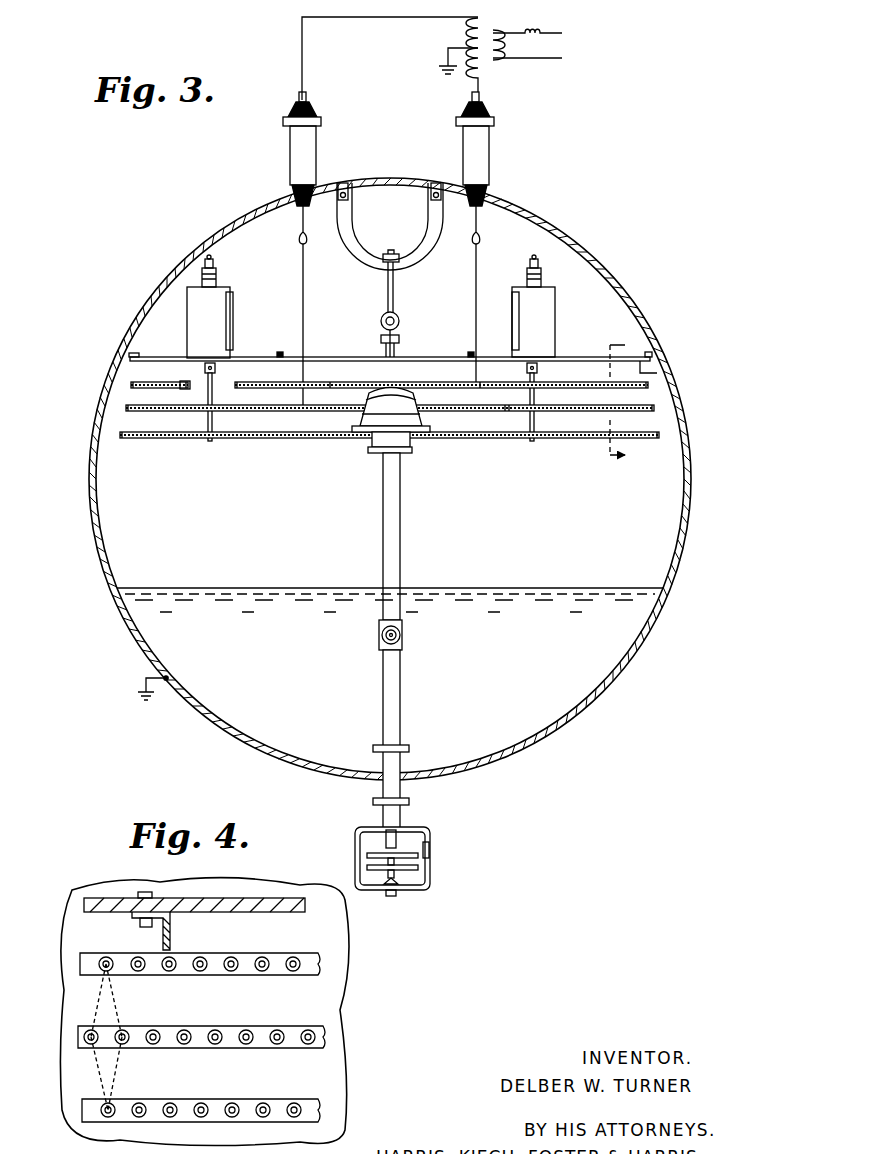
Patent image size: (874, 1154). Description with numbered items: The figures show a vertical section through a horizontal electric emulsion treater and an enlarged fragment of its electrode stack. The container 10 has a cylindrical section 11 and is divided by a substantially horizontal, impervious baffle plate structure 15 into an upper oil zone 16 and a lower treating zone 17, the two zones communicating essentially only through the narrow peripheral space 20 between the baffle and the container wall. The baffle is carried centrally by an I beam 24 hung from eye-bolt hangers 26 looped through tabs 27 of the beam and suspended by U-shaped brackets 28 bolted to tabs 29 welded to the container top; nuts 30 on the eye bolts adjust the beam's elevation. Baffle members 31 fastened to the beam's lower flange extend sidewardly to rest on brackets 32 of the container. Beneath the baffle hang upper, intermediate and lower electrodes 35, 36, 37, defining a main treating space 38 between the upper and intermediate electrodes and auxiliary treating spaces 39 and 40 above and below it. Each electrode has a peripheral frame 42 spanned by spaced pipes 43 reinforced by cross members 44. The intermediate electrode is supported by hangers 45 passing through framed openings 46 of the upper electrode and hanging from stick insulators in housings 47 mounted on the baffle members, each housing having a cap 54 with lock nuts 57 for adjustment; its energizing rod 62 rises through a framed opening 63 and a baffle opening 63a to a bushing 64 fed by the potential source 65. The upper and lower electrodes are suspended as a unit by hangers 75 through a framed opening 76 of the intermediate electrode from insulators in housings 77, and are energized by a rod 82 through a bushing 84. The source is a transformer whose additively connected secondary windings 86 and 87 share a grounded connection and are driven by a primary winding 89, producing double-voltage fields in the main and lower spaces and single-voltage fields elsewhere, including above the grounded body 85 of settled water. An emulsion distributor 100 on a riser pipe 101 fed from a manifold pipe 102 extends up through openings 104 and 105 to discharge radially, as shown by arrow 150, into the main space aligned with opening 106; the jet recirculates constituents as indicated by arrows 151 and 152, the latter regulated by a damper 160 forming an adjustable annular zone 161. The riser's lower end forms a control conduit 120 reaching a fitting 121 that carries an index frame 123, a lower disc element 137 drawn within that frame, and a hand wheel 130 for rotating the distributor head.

In FIG. 3, the container 10 is at (390, 478).
In FIG. 4, the container 10 is at (60, 914).
In FIG. 3, the cylindrical section 11 is at (598, 680).
In FIG. 3, the baffle plate structure 15 is at (632, 352).
In FIG. 3, the oil zone 16 is at (582, 296).
In FIG. 3, the treating zone 17 is at (632, 522).
In FIG. 3, the narrow peripheral space 20 is at (655, 352).
In FIG. 3, the I beam 24 is at (401, 341).
In FIG. 3, the hangers 26 is at (394, 294).
In FIG. 3, the tabs 27 is at (381, 324).
In FIG. 3, the U-shaped brackets 28 is at (352, 246).
In FIG. 3, the tabs 29 is at (437, 184).
In FIG. 3, the nuts 30 is at (392, 254).
In FIG. 3, the baffle members 31 is at (334, 357).
In FIG. 4, the baffle members 31 is at (238, 912).
In FIG. 3, the brackets 32 is at (657, 368).
In FIG. 4, the brackets 32 is at (171, 930).
In FIG. 3, the upper electrode 35 is at (342, 389).
In FIG. 4, the upper electrode 35 is at (169, 1017).
In FIG. 3, the intermediate electrode 36 is at (345, 415).
In FIG. 4, the intermediate electrode 36 is at (76, 1037).
In FIG. 3, the lower electrode 37 is at (117, 435).
In FIG. 4, the lower electrode 37 is at (80, 1110).
In FIG. 3, the main treating space 38 is at (261, 397).
In FIG. 4, the main treating space 38 is at (161, 998).
In FIG. 3, the auxiliary treating space 39 is at (257, 373).
In FIG. 4, the auxiliary treating space 39 is at (107, 934).
In FIG. 3, the auxiliary treating space 40 is at (261, 419).
In FIG. 4, the auxiliary treating space 40 is at (161, 1072).
In FIG. 3, the peripheral frame 42 is at (660, 436).
In FIG. 4, the peripheral frame 42 is at (312, 975).
In FIG. 3, the rods or pipes 43 is at (630, 440).
In FIG. 4, the rods or pipes 43 is at (294, 958).
In FIG. 3, the cross members 44 is at (209, 440).
In FIG. 3, the hangers 45 is at (205, 377).
In FIG. 3, the framed openings 46 is at (196, 390).
In FIG. 3, the housings 47 is at (205, 297).
In FIG. 3, the cap 54 is at (214, 276).
In FIG. 3, the lock nuts 57 is at (214, 258).
In FIG. 3, the rod 62 is at (302, 300).
In FIG. 3, the framed opening 63 is at (340, 386).
In FIG. 3, the opening 63a is at (280, 354).
In FIG. 3, the bushing 64 is at (290, 137).
In FIG. 3, the potential source 65 is at (432, 53).
In FIG. 3, the hangers 75 is at (528, 396).
In FIG. 3, the framed opening 76 is at (546, 414).
In FIG. 3, the housings 77 is at (548, 322).
In FIG. 3, the electrode-energizing rod 82 is at (476, 300).
In FIG. 3, the bushing 84 is at (484, 148).
In FIG. 3, the body 85 is at (146, 600).
In FIG. 3, the secondary winding 86 is at (470, 27).
In FIG. 3, the secondary winding 87 is at (470, 68).
In FIG. 3, the primary winding 89 is at (501, 56).
In FIG. 3, the emulsion distributor 100 is at (388, 428).
In FIG. 3, the riser pipe 101 is at (401, 526).
In FIG. 3, the manifold pipe 102 is at (402, 638).
In FIG. 3, the opening 104 is at (416, 441).
In FIG. 3, the opening 105 is at (358, 411).
In FIG. 3, the opening 106 is at (361, 394).
In FIG. 3, the control conduit 120 is at (401, 692).
In FIG. 3, the fitting 121 is at (401, 760).
In FIG. 3, the index frame 123 is at (414, 848).
In FIG. 3, the hand wheel 130 is at (416, 868).
In FIG. 3, the upper disc 137 is at (410, 854).
In FIG. 3, the arrow 150 is at (428, 402).
In FIG. 3, the arrow 151 is at (410, 393).
In FIG. 3, the arrow 152 is at (424, 414).
In FIG. 3, the damper 160 is at (406, 430).
In FIG. 3, the annular zone 161 is at (362, 418).